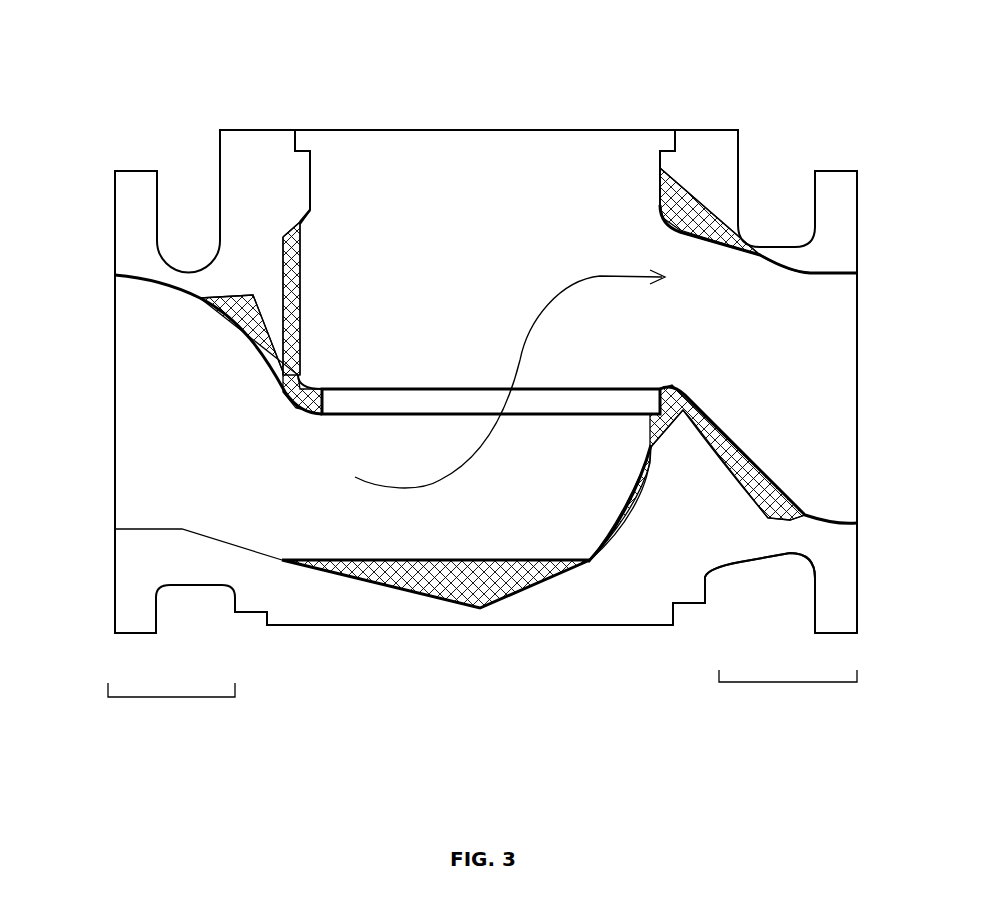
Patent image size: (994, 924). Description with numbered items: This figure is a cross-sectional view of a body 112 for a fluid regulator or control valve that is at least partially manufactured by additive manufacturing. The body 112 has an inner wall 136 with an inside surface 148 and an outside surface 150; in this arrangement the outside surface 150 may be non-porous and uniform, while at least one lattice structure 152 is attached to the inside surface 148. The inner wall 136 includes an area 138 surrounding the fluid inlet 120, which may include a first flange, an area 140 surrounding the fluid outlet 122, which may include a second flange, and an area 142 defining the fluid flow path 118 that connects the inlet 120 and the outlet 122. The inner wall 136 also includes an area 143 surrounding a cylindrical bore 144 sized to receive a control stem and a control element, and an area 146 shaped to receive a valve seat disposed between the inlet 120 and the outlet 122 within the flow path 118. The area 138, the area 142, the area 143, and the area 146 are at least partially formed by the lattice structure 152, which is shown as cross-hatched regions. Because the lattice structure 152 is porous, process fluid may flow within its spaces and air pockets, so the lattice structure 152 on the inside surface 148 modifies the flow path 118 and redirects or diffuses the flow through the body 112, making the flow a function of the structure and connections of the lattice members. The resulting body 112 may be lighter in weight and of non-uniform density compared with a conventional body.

The body 112 is at (102, 96).
The inner wall 136 is at (235, 160).
The area surrounding cylindrical bore 143 is at (262, 210).
The cylindrical bore 144 is at (300, 236).
The lattice structure 152 is at (648, 212).
The fluid flow path 118 is at (493, 379).
The area sized to receive a valve seat 146 is at (652, 400).
The fluid inlet 120 is at (115, 430).
The fluid outlet 122 is at (857, 420).
The inside surface 148 is at (275, 558).
The outside surface 150 is at (357, 626).
The area defining fluid flow path 142 is at (575, 600).
The area surrounding fluid inlet 138 is at (171, 711).
The area surrounding fluid outlet 140 is at (788, 688).